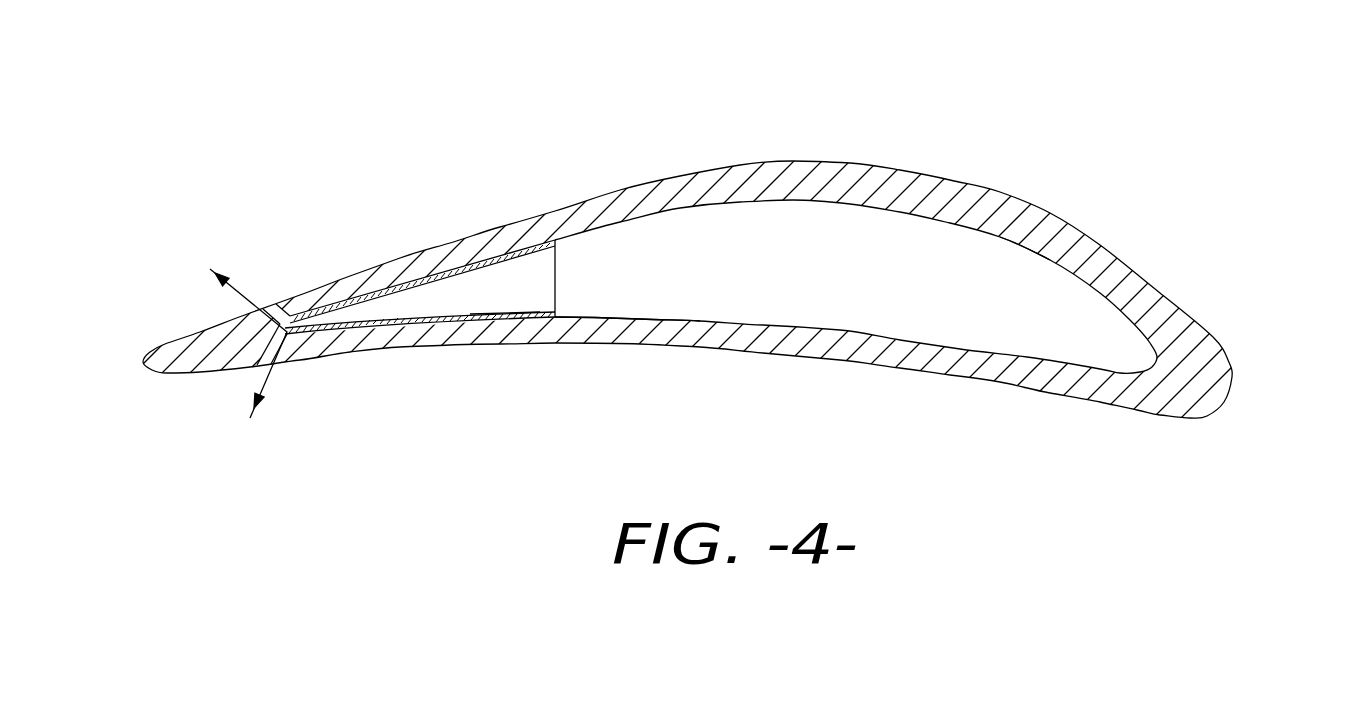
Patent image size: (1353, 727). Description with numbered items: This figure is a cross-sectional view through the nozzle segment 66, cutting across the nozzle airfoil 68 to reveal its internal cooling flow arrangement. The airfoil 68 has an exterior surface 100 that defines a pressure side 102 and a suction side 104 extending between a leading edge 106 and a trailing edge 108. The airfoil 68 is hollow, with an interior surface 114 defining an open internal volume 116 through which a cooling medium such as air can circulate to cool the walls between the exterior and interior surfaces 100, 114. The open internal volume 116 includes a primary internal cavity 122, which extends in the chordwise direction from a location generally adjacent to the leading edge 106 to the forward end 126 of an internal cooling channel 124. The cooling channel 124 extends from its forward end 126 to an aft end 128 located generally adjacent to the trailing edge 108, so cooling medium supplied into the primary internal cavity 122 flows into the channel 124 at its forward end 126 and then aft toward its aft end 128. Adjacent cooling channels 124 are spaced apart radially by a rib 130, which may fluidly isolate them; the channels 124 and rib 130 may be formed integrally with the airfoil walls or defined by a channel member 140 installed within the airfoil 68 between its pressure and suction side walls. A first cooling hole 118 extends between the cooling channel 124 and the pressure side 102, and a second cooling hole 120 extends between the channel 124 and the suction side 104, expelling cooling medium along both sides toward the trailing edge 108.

The nozzle segment 66 is at (715, 239).
The nozzle airfoil 68 is at (715, 290).
The exterior surface 100 is at (889, 160).
The pressure side 102 is at (818, 162).
The suction side 104 is at (757, 355).
The leading edge 106 is at (1227, 403).
The trailing edge 108 is at (143, 367).
The interior surface 114 is at (852, 332).
The open internal volume 116 is at (1003, 265).
The first cooling hole 118 is at (287, 313).
The second cooling hole 120 is at (313, 345).
The primary internal cavity 122 is at (803, 275).
The internal cooling channel 124 is at (618, 278).
The forward end 126 is at (553, 265).
The aft end 128 is at (252, 337).
The rib 130 is at (418, 308).
The channel member 140 is at (504, 323).